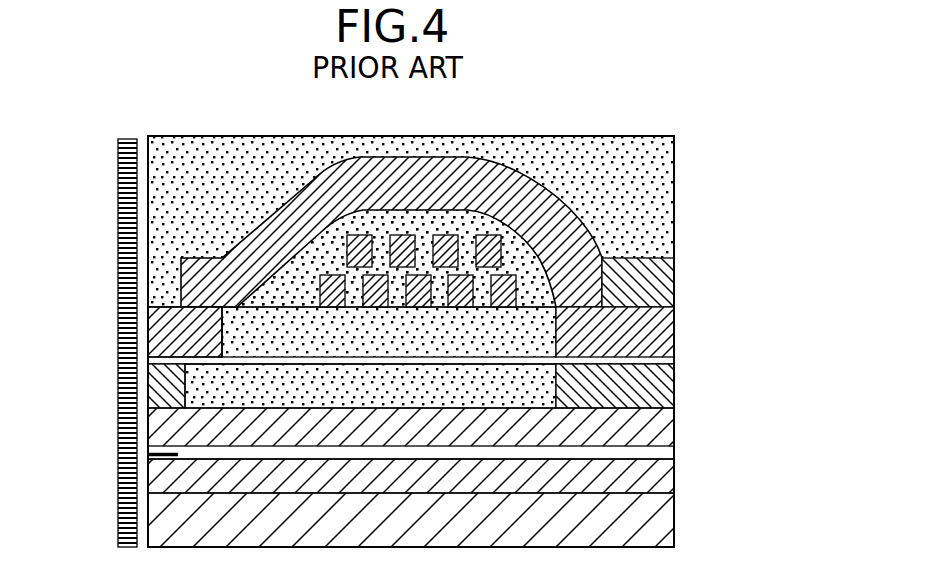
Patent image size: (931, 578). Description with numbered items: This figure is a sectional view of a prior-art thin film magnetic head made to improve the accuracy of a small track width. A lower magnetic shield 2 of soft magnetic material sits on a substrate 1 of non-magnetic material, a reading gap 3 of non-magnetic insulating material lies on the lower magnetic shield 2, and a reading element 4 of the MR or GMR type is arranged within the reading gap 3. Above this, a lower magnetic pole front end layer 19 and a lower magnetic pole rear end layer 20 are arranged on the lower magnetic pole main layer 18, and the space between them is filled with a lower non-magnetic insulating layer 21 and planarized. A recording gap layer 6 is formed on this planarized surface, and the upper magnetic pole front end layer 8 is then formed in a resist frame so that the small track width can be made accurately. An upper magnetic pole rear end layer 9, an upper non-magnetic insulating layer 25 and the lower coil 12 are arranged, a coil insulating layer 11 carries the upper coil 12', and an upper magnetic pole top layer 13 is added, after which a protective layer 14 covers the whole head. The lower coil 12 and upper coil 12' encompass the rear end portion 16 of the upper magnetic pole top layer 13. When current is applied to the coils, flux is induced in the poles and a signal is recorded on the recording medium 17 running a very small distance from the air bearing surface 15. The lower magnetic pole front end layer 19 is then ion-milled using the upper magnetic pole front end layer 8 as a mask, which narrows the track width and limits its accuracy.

The substrate 1 is at (645, 510).
The lower magnetic shield 2 is at (645, 468).
The reading gap 3 is at (643, 450).
The reading element 4 is at (150, 453).
The recording gap layer 6 is at (233, 383).
The upper magnetic pole front end layer 8 is at (173, 332).
The upper magnetic pole rear end layer 9 is at (643, 338).
The coil insulating layer 11 is at (528, 290).
The lower coil 12 is at (491, 184).
The upper coil 12' is at (443, 195).
The upper magnetic pole top layer 13 is at (577, 248).
The protective layer 14 is at (230, 177).
The air bearing surface 15 is at (148, 228).
The rear end portion of the upper magnetic pole top layer 16 is at (642, 285).
The recording medium 17 is at (130, 174).
The lower magnetic pole main layer 18 is at (643, 418).
The lower magnetic pole front end layer 19 is at (167, 383).
The lower magnetic pole rear end layer 20 is at (645, 382).
The lower non-magnetic insulating layer 21 is at (165, 350).
The upper non-magnetic insulating layer 25 is at (537, 342).